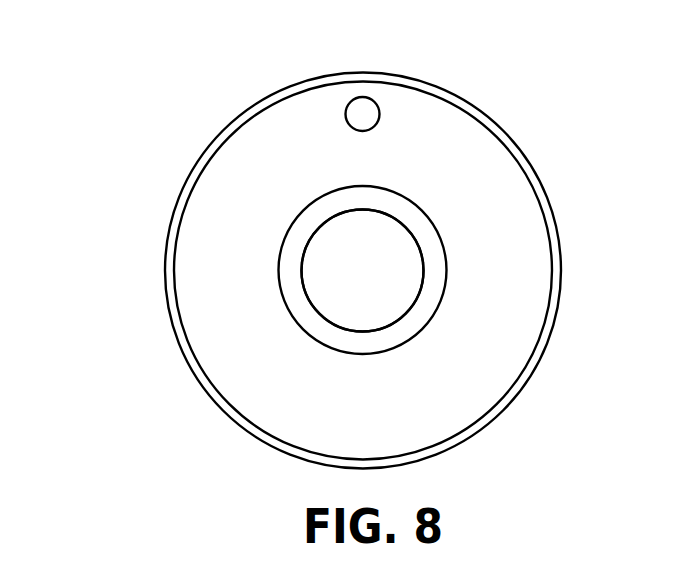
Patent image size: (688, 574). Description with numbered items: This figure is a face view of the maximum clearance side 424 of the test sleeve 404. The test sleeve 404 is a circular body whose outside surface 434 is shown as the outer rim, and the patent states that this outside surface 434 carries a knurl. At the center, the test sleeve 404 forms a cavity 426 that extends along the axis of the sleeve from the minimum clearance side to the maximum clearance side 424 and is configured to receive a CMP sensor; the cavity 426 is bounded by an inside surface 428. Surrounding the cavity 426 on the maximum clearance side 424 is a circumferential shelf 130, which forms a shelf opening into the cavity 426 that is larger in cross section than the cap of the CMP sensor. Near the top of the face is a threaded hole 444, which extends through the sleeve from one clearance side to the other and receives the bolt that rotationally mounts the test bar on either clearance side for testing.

The test sleeve 404 is at (224, 42).
The maximum clearance side 424 is at (448, 150).
The outside surface 434 is at (542, 182).
The threaded hole 444 is at (365, 113).
The cavity 426 is at (333, 248).
The inside surface 428 is at (304, 298).
The shelf 130 is at (422, 313).